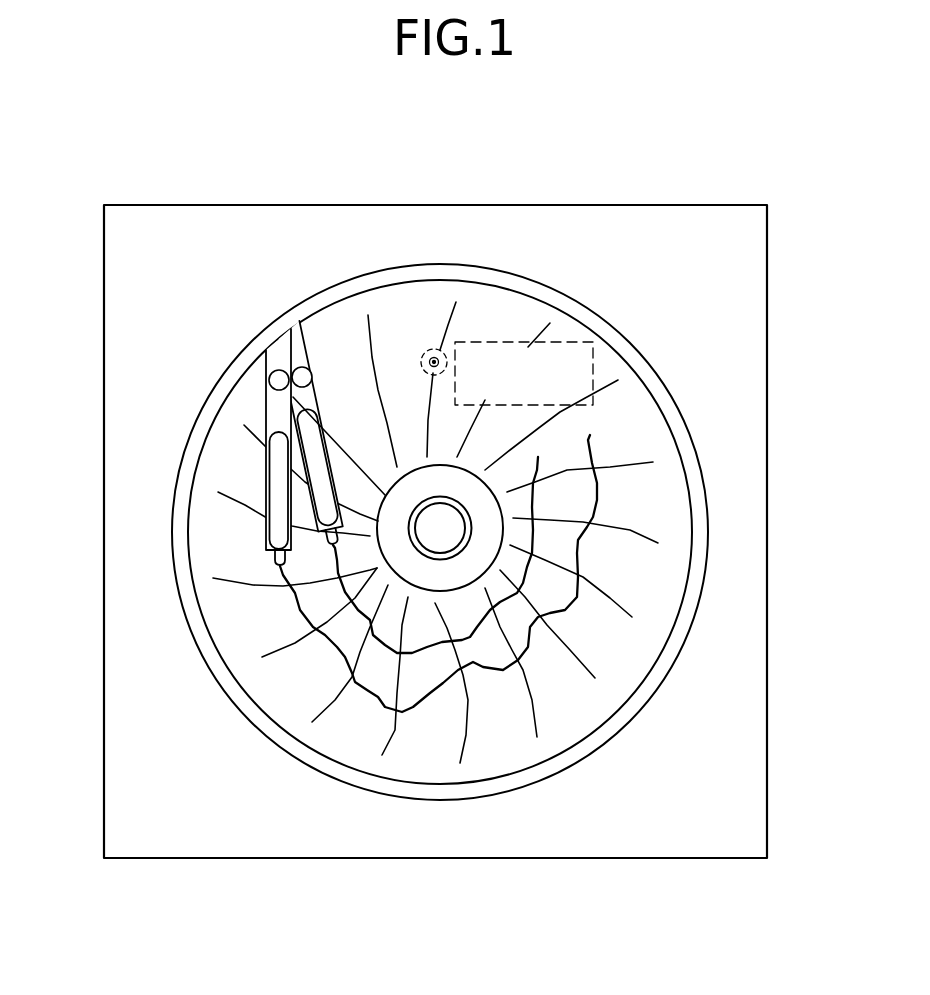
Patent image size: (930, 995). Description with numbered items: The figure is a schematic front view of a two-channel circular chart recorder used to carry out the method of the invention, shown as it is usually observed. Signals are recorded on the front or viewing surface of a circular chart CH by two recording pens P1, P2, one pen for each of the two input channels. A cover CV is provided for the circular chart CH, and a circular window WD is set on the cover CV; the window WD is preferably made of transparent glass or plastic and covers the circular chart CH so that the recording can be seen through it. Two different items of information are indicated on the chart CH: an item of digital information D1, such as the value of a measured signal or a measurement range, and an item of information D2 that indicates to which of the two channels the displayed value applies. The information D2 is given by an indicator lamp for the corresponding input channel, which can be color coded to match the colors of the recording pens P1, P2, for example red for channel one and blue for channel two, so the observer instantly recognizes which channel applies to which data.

The cover CV is at (648, 205).
The circular window WD is at (643, 517).
The circular chart CH is at (612, 451).
The item of digital information D1 is at (507, 342).
The item of information indicating channel D2 is at (434, 349).
The recording pen P1 is at (278, 410).
The recording pen P2 is at (318, 465).